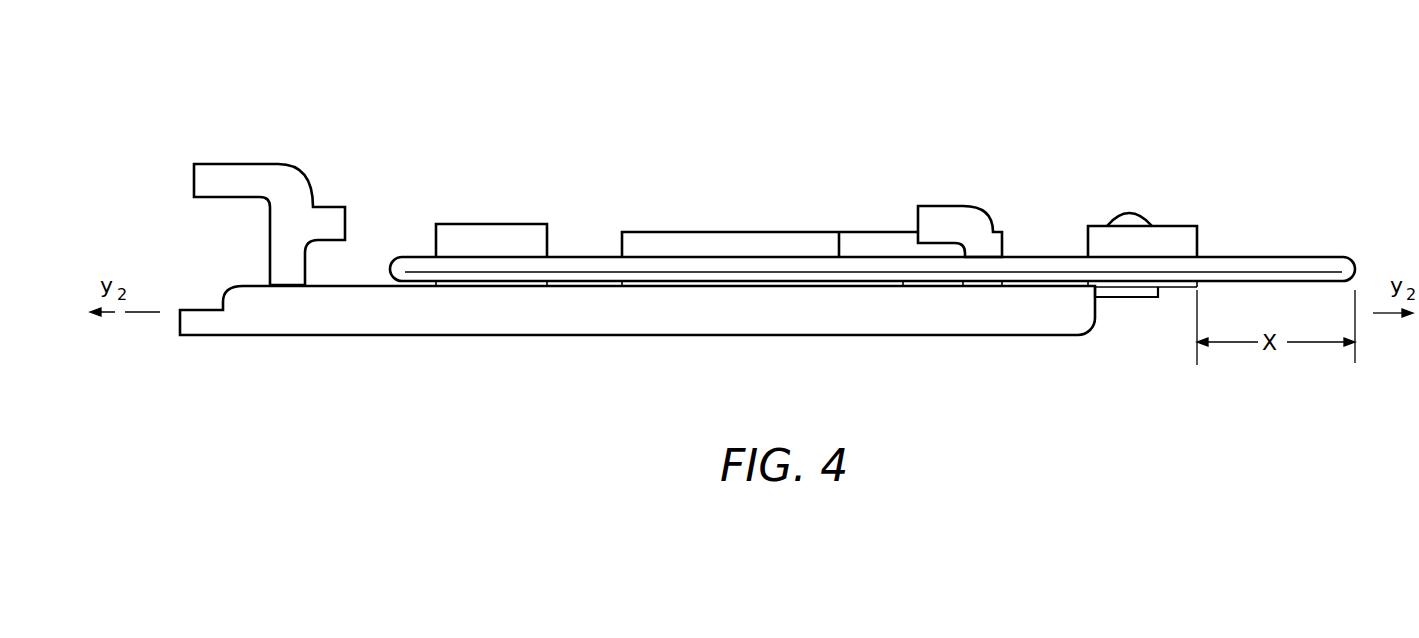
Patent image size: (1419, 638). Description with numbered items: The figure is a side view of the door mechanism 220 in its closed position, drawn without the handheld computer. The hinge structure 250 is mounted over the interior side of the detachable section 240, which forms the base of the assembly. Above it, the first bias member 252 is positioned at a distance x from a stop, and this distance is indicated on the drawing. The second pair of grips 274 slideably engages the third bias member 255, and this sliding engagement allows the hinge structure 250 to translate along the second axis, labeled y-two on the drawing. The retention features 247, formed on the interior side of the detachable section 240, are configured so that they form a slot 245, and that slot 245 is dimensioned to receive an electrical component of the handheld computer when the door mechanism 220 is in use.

The door mechanism 220 is at (778, 225).
The detachable section 240 is at (678, 333).
The slot 245 is at (870, 232).
The retention features 247 is at (333, 207).
The hinge structure 250 is at (1048, 255).
The first bias member 252 is at (1278, 265).
The third bias member 255 is at (587, 270).
The second pair of grips 274 is at (485, 223).